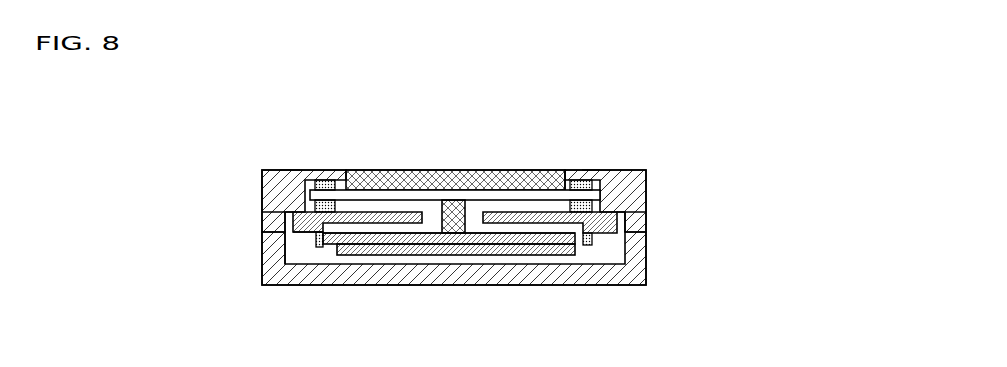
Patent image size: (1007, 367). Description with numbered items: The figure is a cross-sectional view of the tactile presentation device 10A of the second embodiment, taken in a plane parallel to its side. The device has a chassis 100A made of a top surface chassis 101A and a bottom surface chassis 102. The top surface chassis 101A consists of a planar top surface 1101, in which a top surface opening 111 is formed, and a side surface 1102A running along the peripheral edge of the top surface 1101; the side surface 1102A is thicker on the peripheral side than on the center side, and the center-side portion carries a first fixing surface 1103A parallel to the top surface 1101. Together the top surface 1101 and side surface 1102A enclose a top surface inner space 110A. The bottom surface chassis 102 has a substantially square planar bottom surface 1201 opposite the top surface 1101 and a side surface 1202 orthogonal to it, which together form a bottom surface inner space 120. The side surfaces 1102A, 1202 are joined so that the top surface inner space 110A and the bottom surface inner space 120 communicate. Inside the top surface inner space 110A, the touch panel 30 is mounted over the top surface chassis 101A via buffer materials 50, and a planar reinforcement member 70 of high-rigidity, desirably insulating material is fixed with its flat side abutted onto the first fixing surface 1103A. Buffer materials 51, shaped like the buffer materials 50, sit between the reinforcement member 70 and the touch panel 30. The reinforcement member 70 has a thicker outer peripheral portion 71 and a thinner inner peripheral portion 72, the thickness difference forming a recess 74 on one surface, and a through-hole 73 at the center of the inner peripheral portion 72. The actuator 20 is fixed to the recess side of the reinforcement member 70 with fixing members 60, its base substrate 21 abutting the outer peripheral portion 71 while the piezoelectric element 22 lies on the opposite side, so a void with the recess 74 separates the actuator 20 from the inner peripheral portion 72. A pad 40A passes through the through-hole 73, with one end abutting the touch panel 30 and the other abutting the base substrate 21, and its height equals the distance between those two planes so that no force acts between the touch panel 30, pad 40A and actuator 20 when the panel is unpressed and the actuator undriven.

The tactile presentation device 10A is at (666, 81).
The chassis 100A is at (684, 127).
The top surface chassis 101A is at (659, 152).
The top surface 1101 is at (599, 171).
The side surface 1102A is at (640, 195).
The first fixing surface 1103A is at (276, 213).
The bottom surface chassis 102 is at (674, 289).
The bottom surface 1201 is at (593, 266).
The side surface 1202 is at (640, 251).
The bottom surface inner space 120 is at (547, 268).
The touch panel 30 is at (432, 179).
The top surface opening 111 is at (560, 165).
The top surface inner space 110A is at (390, 200).
The buffer materials 51 is at (291, 169).
The buffer materials 50 is at (325, 180).
The pad 40A is at (454, 212).
The actuator 20 is at (419, 324).
The base substrate 21 is at (425, 256).
The piezoelectric element 22 is at (398, 256).
The through-hole 73 is at (479, 228).
The recess 74 is at (364, 240).
The fixing members 60 is at (320, 249).
The reinforcement member 70 is at (218, 272).
The outer peripheral portion 71 is at (312, 233).
The inner peripheral portion 72 is at (284, 252).